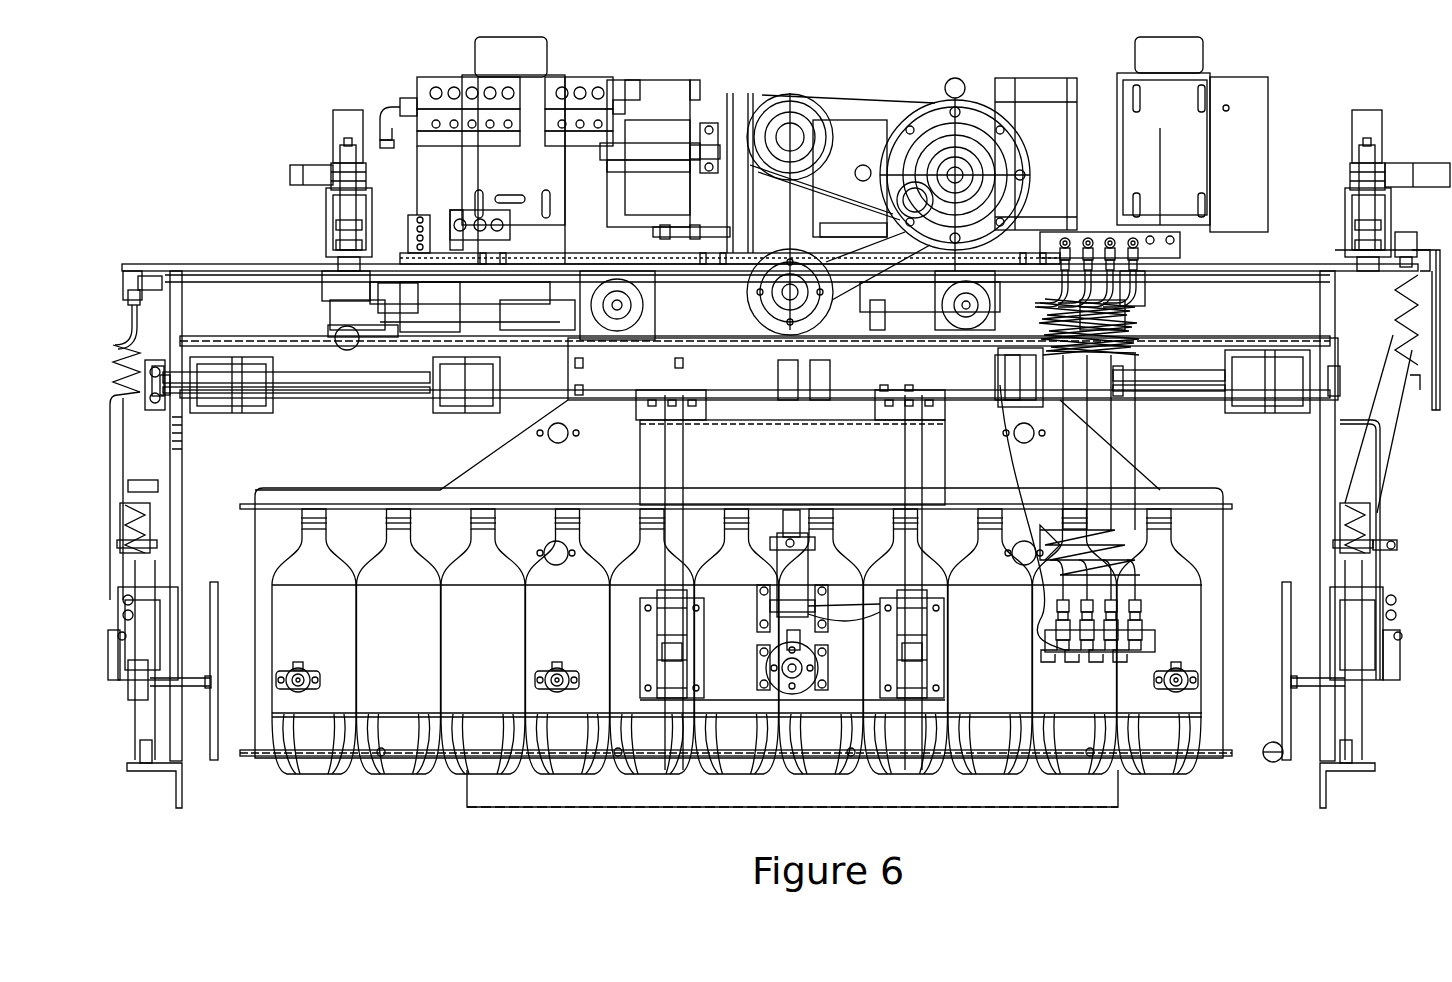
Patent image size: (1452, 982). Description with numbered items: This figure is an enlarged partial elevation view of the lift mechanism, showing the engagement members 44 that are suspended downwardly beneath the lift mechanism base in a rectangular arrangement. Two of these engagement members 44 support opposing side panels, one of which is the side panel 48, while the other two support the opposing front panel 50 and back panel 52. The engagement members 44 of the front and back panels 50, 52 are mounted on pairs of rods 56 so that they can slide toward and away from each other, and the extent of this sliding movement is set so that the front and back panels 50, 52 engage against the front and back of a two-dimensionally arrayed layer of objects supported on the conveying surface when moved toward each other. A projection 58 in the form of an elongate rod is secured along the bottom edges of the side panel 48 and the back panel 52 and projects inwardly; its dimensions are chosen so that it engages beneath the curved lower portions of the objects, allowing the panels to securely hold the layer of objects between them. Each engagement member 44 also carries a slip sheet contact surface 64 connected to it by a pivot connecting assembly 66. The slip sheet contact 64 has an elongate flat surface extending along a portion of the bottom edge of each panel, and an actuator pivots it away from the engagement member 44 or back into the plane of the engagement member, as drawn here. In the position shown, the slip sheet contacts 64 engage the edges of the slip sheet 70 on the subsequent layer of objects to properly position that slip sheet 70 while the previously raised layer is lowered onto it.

The engagement members 44 is at (182, 470).
The side panel 48 is at (480, 605).
The front panel 50 is at (222, 745).
The back panel 52 is at (1280, 710).
The rods 56 is at (318, 398).
The projection 58 is at (1150, 745).
The slip sheet contact surface 64 is at (185, 786).
The pivot connecting assembly 66 is at (157, 365).
The slip sheet 70 is at (270, 510).